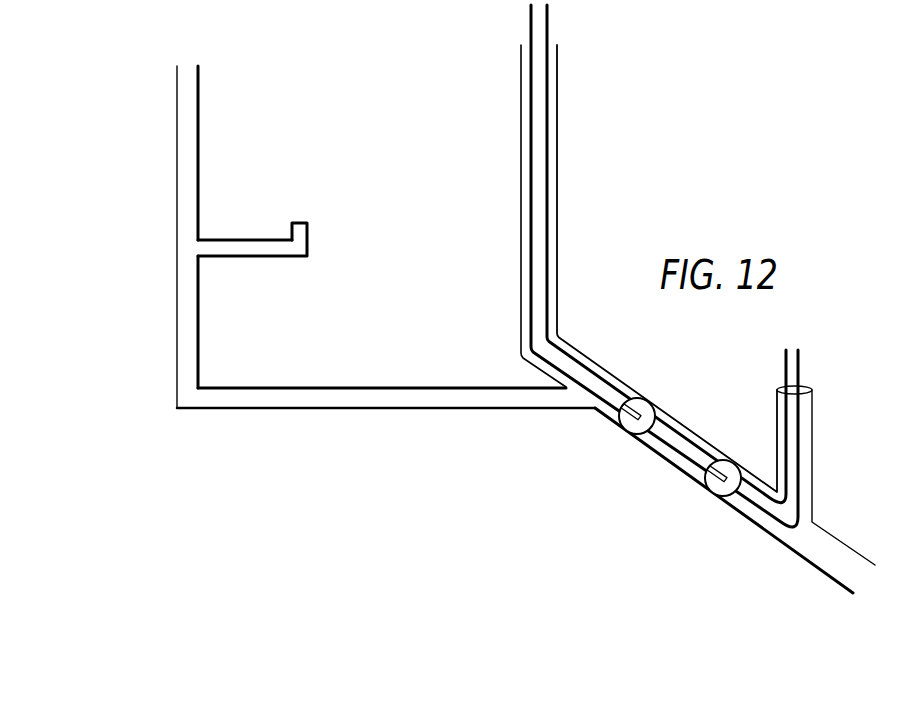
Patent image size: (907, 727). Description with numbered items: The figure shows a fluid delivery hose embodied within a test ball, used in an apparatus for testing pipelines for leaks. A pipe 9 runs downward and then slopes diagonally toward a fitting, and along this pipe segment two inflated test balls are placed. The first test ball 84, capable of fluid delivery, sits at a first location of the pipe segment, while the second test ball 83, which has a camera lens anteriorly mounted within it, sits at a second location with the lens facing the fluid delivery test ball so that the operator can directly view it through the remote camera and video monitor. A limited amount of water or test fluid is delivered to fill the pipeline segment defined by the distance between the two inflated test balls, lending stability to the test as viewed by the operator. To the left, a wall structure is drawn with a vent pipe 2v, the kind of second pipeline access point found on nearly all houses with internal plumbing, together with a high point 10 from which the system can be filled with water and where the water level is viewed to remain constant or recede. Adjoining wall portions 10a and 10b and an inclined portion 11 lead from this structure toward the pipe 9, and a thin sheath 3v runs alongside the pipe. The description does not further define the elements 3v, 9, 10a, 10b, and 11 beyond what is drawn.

The vent pipe 2v is at (198, 120).
The sheath plate 3v is at (558, 68).
The pipe 9 is at (557, 237).
The high point 10 is at (307, 226).
The vertical wall portion 10a is at (198, 183).
The bottom wall portion 10b is at (408, 409).
The inclined wall portion 11 is at (573, 410).
The test ball with camera lens 83 is at (713, 493).
The fluid delivery test ball 84 is at (633, 431).